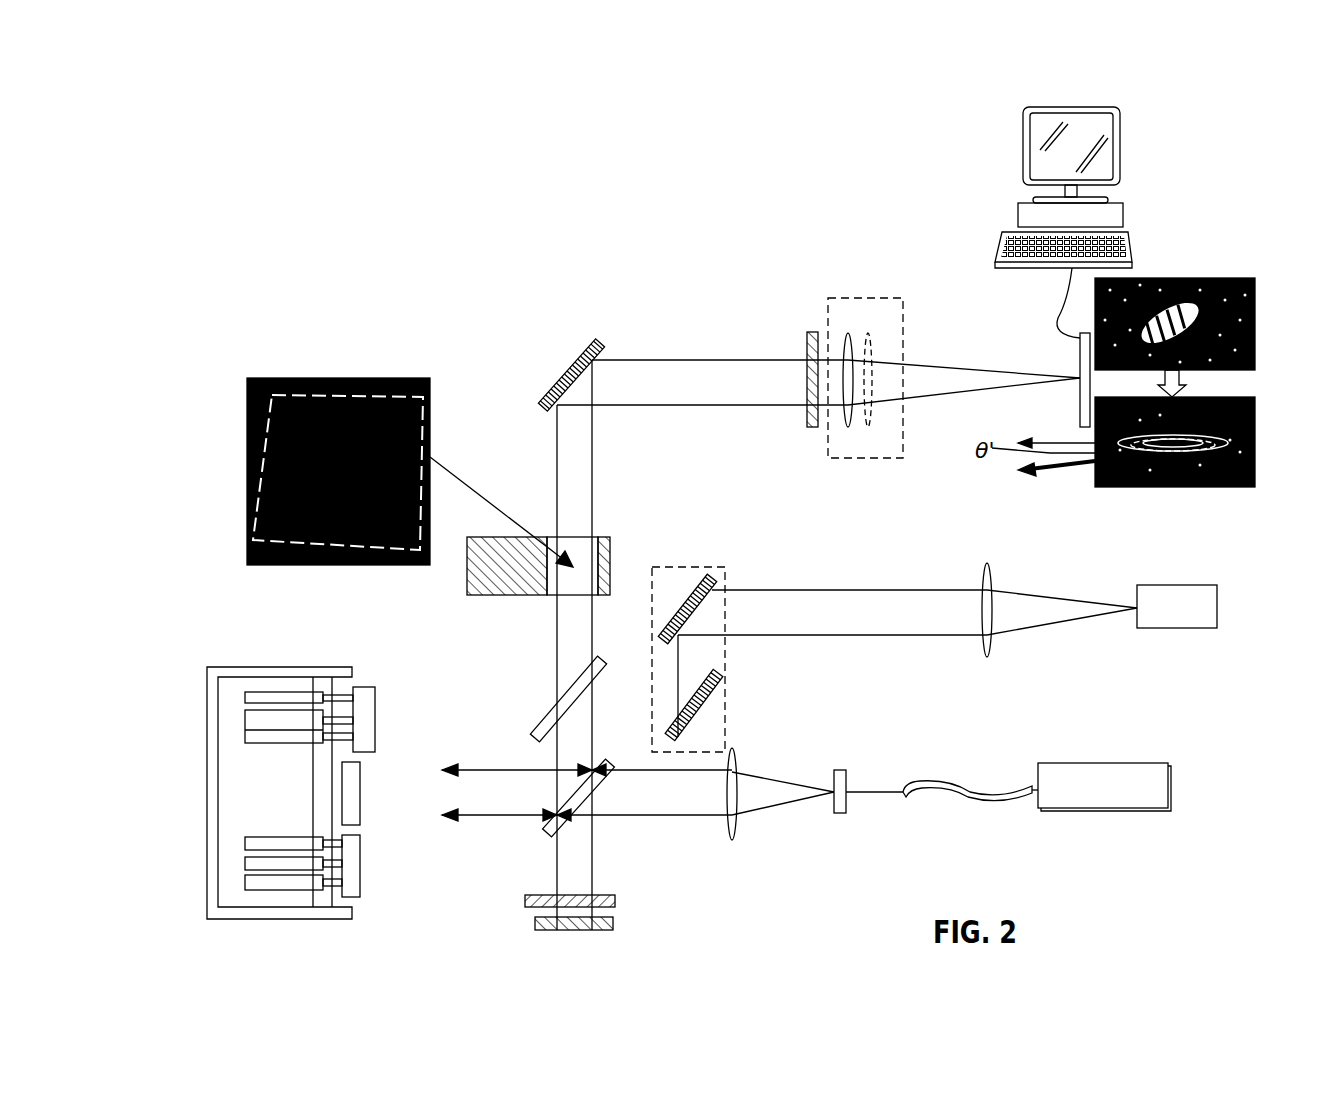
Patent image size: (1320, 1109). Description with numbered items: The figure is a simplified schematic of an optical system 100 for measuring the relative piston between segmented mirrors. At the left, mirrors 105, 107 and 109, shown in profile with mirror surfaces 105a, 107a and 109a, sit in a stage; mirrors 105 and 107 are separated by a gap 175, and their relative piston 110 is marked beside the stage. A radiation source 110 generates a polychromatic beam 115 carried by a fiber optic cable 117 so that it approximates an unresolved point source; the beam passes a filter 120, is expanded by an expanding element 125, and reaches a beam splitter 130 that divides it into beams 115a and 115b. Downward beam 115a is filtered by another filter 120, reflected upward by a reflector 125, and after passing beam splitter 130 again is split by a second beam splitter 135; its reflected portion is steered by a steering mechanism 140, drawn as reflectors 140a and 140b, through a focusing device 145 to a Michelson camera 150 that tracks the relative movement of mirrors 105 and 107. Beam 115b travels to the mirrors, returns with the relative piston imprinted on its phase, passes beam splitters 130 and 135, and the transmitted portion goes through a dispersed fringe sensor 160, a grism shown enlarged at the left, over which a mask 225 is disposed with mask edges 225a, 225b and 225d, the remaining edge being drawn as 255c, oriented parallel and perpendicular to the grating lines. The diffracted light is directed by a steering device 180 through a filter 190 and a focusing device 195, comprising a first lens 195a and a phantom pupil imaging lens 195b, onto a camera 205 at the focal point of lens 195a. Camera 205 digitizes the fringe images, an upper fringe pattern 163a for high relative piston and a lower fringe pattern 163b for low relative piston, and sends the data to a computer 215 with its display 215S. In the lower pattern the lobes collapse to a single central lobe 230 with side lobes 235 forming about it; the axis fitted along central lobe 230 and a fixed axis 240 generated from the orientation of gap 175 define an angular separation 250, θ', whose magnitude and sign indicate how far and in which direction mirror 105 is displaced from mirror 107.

The optical system 100 is at (1187, 862).
The mirror 105 is at (367, 682).
The mirror surface 105a is at (375, 698).
The mirror 107 is at (355, 828).
The mirror surface 107a is at (360, 796).
The mirror 109 is at (348, 903).
The mirror surface 109a is at (360, 866).
The radiation source 110 is at (1130, 763).
The polychromatic beam of light 115 is at (893, 795).
The beam 115a is at (593, 862).
The beam 115b is at (492, 768).
The fiber optic cable 117 is at (973, 797).
The filter 120 is at (615, 900).
The expanding element 125 is at (613, 925).
The beam splitter 130 is at (608, 767).
The beam splitter 135 is at (548, 717).
The steering mechanism 140 is at (727, 572).
The reflector 140a is at (673, 602).
The reflector 140b is at (718, 688).
The focusing device 145 is at (985, 577).
The Michelson camera 150 is at (1178, 585).
The dispersed fringe sensor 160 is at (368, 378).
The upper fringe pattern 163a is at (1220, 280).
The lower fringe pattern 163b is at (1223, 487).
The gap 175 is at (345, 753).
The steering device 180 is at (576, 352).
The filter 190 is at (807, 332).
The focusing device 195 is at (903, 442).
The first lens 195a is at (848, 420).
The second lens 195b is at (875, 347).
The camera 205 is at (1080, 398).
The computer 215 is at (1022, 182).
The computer display 215S is at (1120, 138).
The mask 225 is at (480, 595).
The mask edge 225a is at (553, 577).
The mask edge 225b is at (577, 533).
The mask edge 225d is at (577, 597).
The mount portion 255c is at (585, 537).
The central lobe 230 is at (1077, 440).
The side lobes 235 is at (1222, 400).
The fixed axis 240 is at (1050, 460).
The angular separation 250 is at (1023, 460).